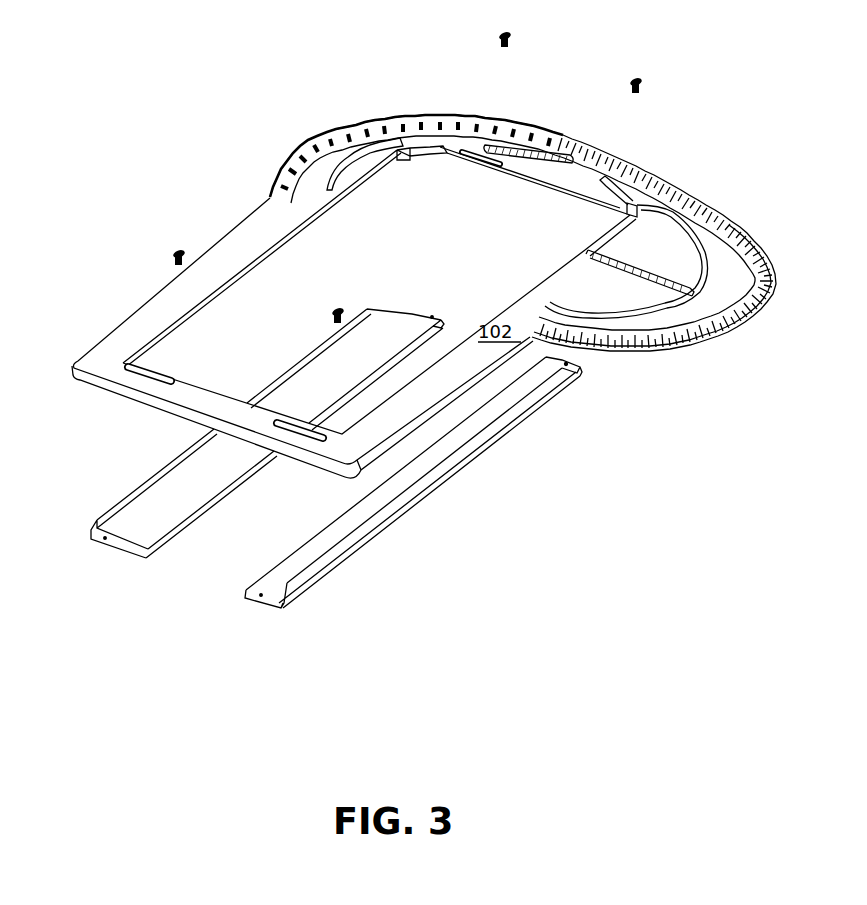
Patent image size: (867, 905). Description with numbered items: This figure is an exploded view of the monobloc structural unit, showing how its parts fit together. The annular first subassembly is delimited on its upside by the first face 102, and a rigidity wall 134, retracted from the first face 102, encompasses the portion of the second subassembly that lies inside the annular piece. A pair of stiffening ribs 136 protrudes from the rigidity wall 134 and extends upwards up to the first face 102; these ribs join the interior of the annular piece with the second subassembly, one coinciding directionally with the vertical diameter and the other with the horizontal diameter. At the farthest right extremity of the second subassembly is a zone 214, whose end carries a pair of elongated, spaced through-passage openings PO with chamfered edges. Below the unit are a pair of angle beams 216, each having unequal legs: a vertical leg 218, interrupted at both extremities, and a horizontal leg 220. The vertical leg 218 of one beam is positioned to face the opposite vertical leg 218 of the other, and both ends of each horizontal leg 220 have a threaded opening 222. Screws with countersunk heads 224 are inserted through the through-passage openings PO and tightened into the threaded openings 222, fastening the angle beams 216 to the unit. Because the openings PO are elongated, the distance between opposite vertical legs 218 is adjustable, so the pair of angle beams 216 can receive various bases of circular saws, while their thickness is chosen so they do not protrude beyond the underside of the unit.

The first face 102 is at (424, 296).
The rigidity wall 134 is at (645, 240).
The stiffening ribs 136 is at (655, 275).
The zone 214 is at (203, 398).
The angle beams 216 is at (378, 376).
The vertical leg 218 is at (137, 498).
The horizontal leg 220 is at (187, 490).
The threaded opening 222 is at (566, 364).
The screws with countersunk heads 224 is at (642, 80).
The elongated through-passage openings PO is at (145, 367).